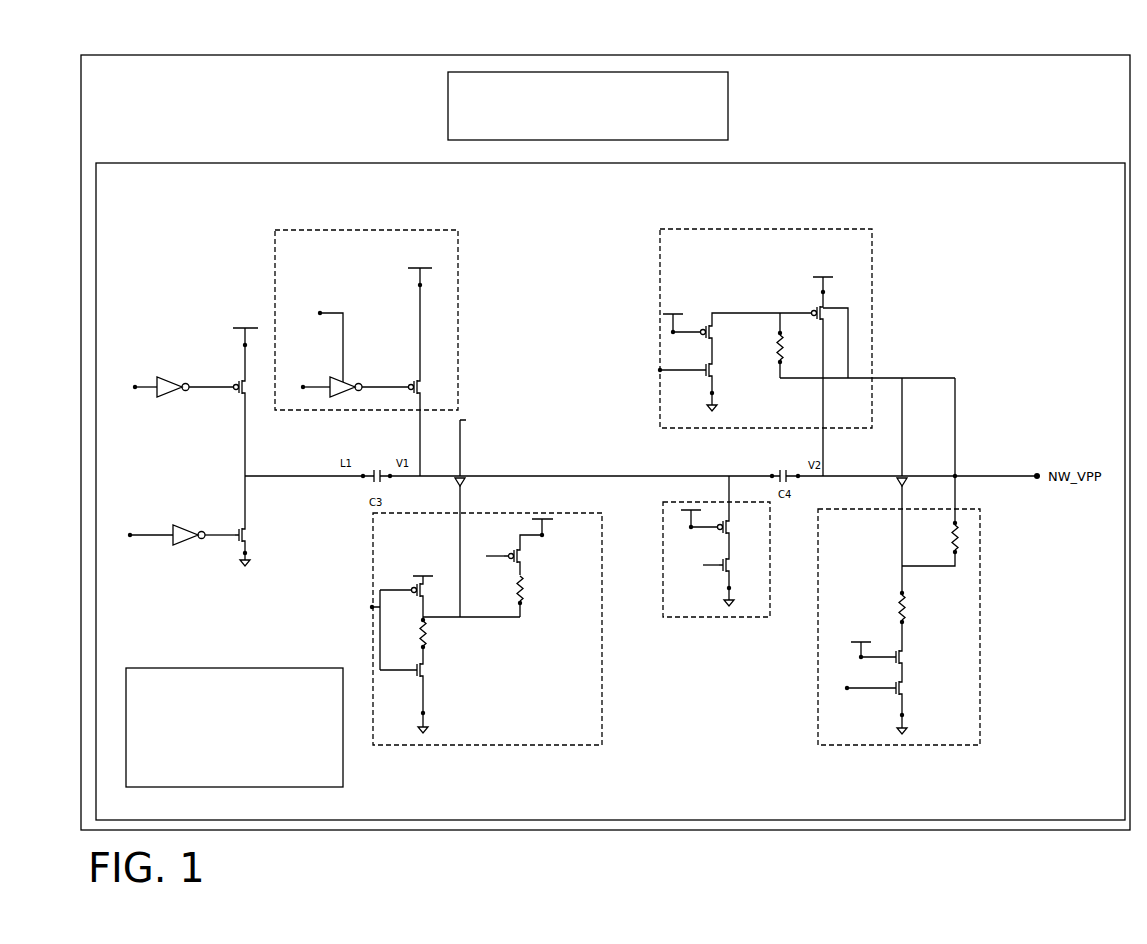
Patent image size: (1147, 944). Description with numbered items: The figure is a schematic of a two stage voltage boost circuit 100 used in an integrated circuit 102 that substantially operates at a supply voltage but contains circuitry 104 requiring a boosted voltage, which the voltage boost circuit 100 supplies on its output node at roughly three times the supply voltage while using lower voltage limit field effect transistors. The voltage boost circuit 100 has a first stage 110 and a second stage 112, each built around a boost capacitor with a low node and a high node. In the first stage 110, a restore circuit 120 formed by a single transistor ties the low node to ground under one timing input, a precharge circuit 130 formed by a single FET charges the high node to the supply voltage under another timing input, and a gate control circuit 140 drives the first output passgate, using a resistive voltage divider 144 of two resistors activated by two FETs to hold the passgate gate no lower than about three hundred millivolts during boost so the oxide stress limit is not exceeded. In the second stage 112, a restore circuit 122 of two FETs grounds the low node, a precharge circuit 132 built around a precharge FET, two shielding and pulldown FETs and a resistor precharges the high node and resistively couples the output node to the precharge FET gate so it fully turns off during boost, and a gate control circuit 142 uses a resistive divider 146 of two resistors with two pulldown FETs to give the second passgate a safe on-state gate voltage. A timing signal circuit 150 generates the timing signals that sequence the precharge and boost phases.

The voltage boost circuit 100 is at (398, 204).
The integrated circuit 102 is at (318, 94).
The circuitry requiring a boosted voltage 104 is at (707, 134).
The first stage 110 is at (514, 452).
The second stage 112 is at (722, 457).
The restore circuit 120 is at (227, 562).
The restore circuit 122 is at (715, 619).
The precharge circuit 130 is at (459, 252).
The precharge circuit 132 is at (782, 228).
The gate control circuit 140 is at (506, 750).
The gate control circuit 142 is at (954, 709).
The resistive voltage divider 144 is at (504, 634).
The resistive divider 146 is at (946, 586).
The timing signal circuit 150 is at (270, 731).